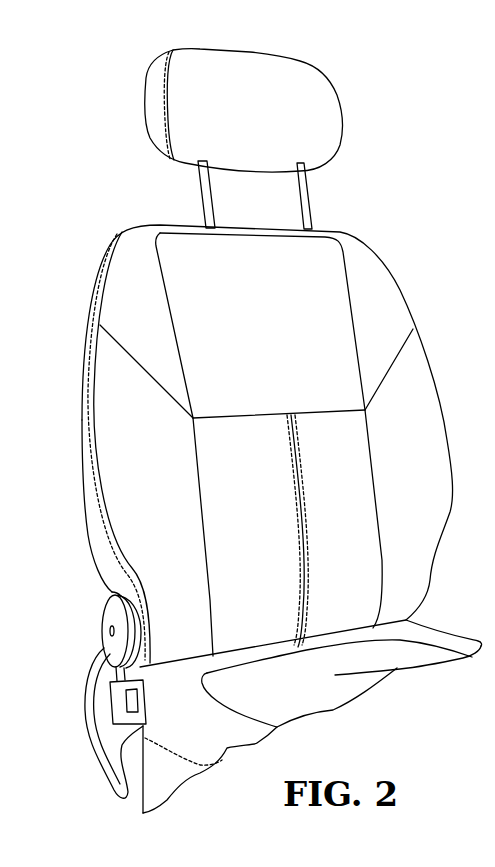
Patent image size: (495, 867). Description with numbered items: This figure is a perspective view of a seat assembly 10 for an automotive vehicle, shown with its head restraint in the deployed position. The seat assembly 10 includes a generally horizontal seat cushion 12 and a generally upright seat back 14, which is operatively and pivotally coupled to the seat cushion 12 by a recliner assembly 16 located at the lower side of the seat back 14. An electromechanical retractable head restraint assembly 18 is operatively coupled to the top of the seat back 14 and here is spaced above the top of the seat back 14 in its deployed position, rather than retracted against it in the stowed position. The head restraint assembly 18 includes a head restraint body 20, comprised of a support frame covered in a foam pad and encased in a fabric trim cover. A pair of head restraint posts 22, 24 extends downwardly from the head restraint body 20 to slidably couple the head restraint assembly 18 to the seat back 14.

The seat assembly 10 is at (368, 112).
The seat cushion 12 is at (363, 668).
The seat back 14 is at (412, 411).
The recliner assembly 16 is at (105, 621).
The head restraint assembly 18 is at (155, 60).
The head restraint body 20 is at (313, 136).
The head restraint post 22 is at (205, 195).
The head restraint post 24 is at (306, 192).